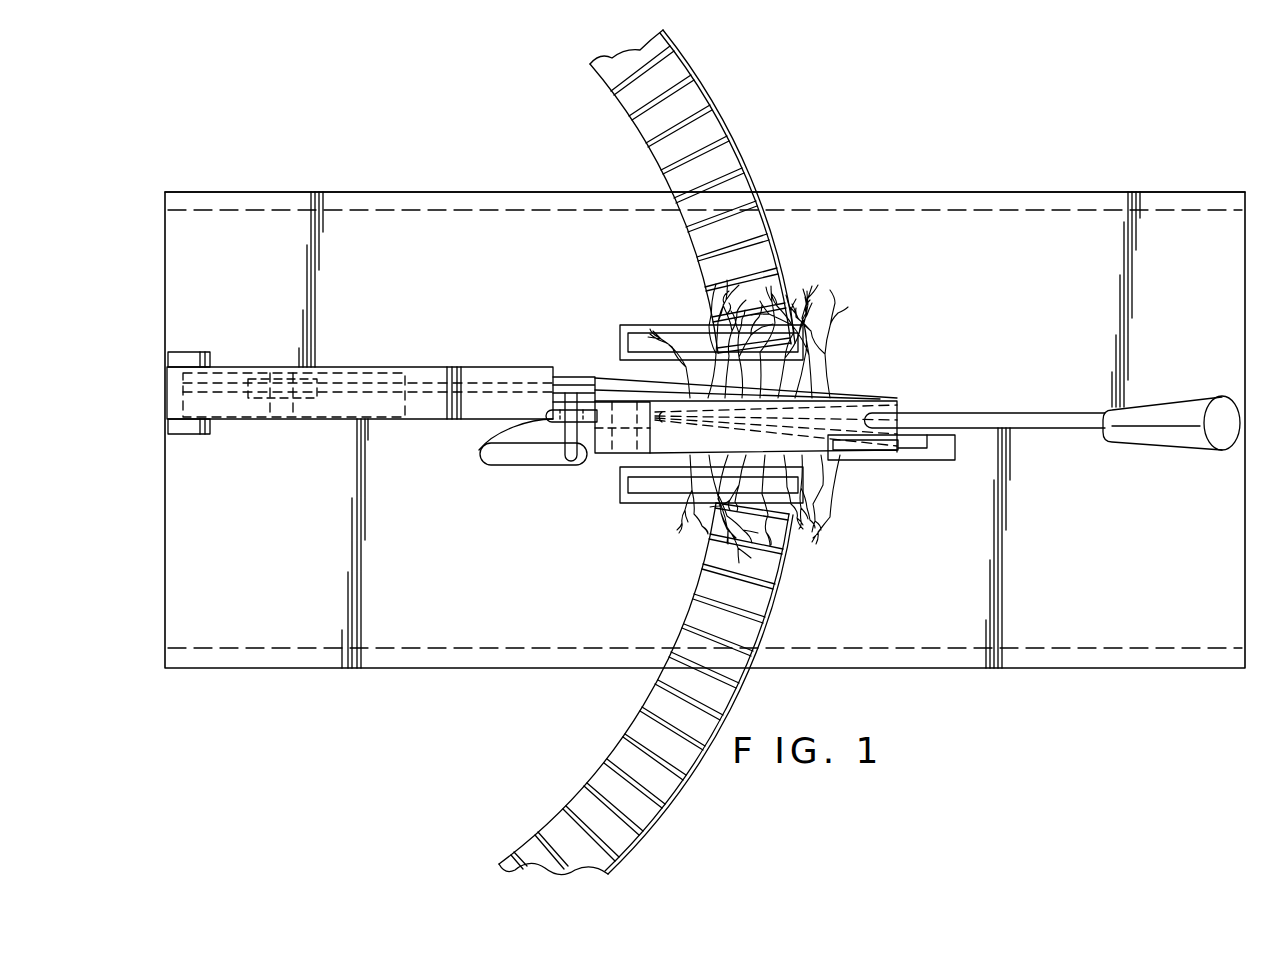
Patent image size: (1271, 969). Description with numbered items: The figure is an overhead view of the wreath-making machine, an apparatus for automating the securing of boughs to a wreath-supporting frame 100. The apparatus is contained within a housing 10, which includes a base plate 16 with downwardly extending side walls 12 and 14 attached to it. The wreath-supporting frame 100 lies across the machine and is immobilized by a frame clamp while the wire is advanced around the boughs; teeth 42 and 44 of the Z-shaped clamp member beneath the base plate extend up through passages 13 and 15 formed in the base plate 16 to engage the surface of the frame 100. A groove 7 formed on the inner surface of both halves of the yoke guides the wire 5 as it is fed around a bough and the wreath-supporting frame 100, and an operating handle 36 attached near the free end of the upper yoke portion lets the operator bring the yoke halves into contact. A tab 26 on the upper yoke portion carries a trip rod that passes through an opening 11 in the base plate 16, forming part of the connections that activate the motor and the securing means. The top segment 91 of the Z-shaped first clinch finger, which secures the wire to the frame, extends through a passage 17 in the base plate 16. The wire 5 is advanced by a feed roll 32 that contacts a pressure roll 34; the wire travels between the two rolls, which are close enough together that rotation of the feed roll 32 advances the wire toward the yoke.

The housing 10 is at (488, 697).
The side wall 12 is at (1018, 663).
The side wall 14 is at (980, 192).
The base plate 16 is at (868, 232).
The wreath-supporting frame 100 is at (770, 600).
The groove 7 is at (832, 470).
The wire 5 is at (582, 380).
The opening 11 is at (520, 456).
The tab 26 is at (484, 441).
The passage 13 is at (623, 502).
The tooth 42 is at (655, 493).
The passage 15 is at (627, 337).
The tooth 44 is at (651, 334).
The passage 17 is at (945, 459).
The top segment 91 is at (913, 451).
The feed roll 32 is at (397, 422).
The pressure roll 34 is at (313, 428).
The operating handle 36 is at (1012, 422).